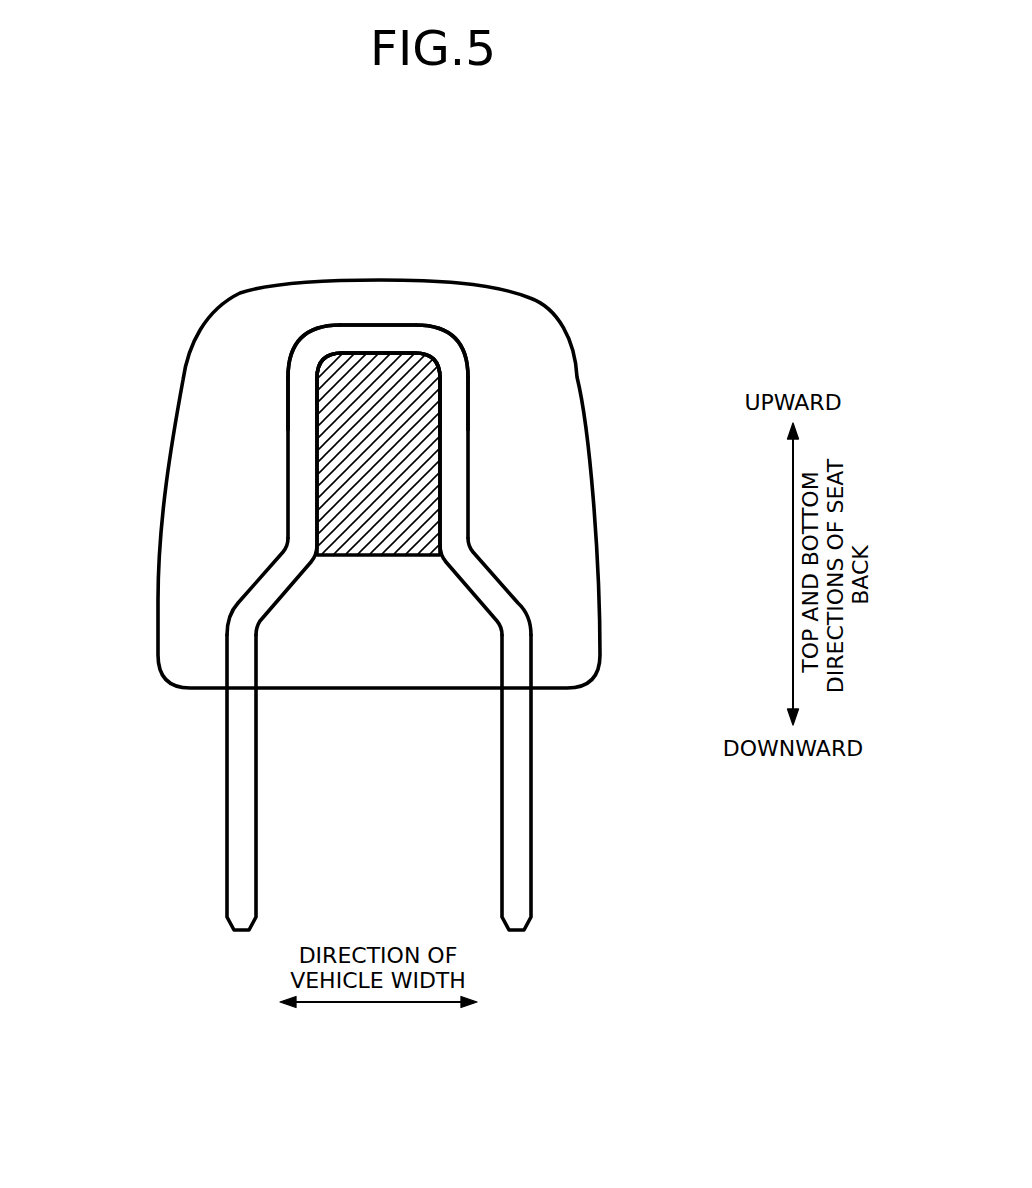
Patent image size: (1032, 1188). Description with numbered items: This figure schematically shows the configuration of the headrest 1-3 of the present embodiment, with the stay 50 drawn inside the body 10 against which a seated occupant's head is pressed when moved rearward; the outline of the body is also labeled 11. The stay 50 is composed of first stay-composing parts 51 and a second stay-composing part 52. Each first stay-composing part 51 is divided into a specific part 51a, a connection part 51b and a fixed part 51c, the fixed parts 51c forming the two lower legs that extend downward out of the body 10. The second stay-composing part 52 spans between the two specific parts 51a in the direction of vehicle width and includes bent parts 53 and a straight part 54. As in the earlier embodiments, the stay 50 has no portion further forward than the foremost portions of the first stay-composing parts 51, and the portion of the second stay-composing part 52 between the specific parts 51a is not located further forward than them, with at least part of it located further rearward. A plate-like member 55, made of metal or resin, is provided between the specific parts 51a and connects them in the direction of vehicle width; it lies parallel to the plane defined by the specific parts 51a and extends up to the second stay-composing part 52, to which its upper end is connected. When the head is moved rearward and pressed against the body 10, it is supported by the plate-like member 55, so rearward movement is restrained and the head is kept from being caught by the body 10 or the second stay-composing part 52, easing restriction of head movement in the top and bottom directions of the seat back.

The headrest 1-3 is at (504, 234).
The body 10 is at (590, 321).
The headrest pad 11 is at (578, 377).
The stay 50 is at (422, 297).
The first stay-composing parts 51 is at (501, 751).
The specific parts 51a is at (288, 456).
The connection parts 51b is at (479, 603).
The fixed parts 51c is at (501, 813).
The second stay-composing part 52 is at (358, 312).
The bent parts 53 is at (305, 340).
The straight part 54 is at (383, 324).
The plate-like member 55 is at (440, 475).